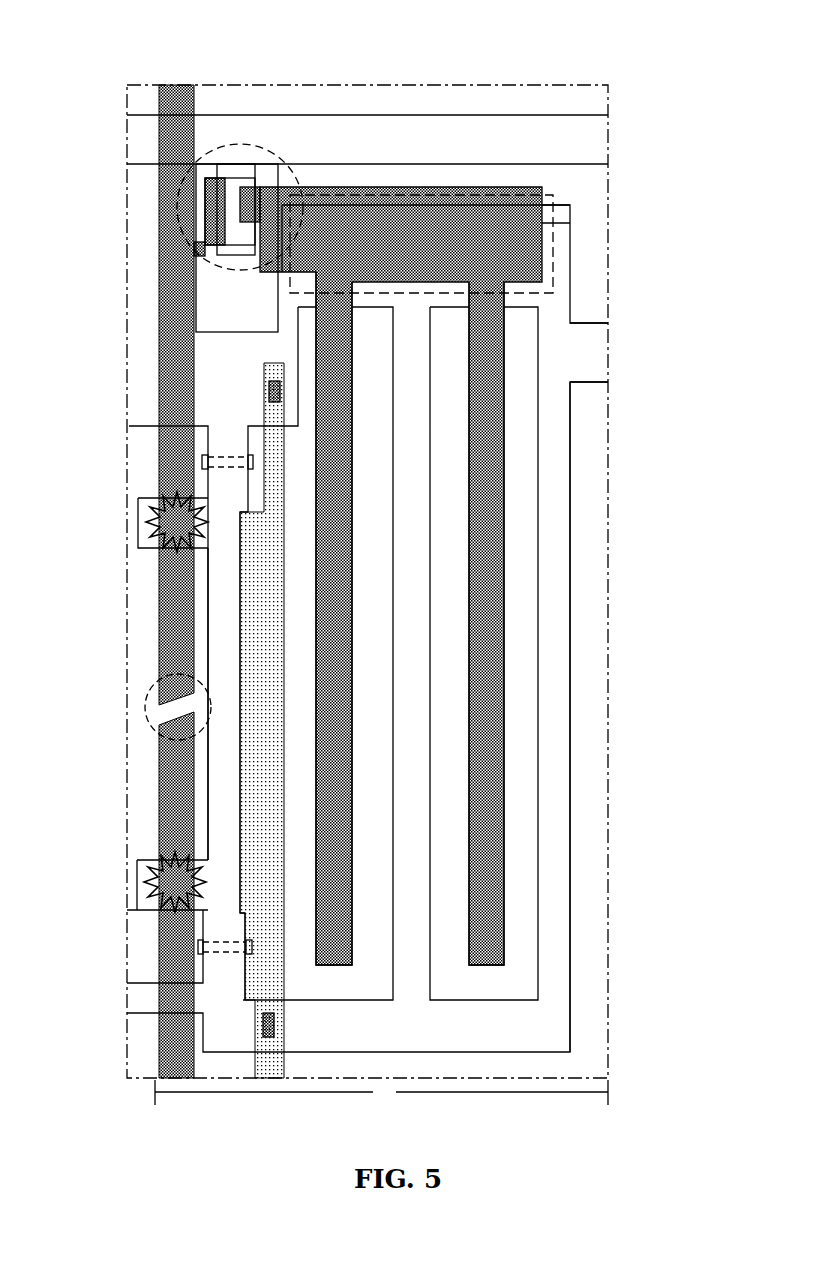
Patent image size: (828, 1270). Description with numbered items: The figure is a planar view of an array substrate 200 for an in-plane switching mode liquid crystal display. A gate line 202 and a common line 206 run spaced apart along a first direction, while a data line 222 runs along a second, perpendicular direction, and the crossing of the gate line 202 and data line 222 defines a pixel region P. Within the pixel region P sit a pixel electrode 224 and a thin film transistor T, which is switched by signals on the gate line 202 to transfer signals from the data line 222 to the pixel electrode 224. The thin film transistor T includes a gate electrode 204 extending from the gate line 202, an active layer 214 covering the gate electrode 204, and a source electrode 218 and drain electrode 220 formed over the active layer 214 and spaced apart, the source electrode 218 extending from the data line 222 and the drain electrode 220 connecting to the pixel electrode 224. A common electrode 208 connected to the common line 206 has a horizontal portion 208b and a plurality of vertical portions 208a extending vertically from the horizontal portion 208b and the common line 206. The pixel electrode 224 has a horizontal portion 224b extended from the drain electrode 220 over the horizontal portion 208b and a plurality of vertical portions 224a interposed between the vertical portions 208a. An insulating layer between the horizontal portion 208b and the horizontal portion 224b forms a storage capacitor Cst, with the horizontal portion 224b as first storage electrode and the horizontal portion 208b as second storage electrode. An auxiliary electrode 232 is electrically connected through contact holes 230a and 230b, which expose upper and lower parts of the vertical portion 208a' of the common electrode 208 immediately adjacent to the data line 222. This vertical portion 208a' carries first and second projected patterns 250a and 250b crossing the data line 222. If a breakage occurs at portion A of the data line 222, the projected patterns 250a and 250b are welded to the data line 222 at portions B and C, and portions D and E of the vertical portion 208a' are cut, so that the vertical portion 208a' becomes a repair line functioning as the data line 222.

The array substrate 200 is at (608, 776).
The gate line 202 is at (500, 114).
The gate electrode 204 is at (232, 258).
The common line 206 is at (570, 356).
The common electrode 208 is at (723, 313).
The vertical portions of the common electrode 208a is at (643, 717).
The vertical portion of the common electrode immediately adjacent to the data line 208a' is at (131, 704).
The horizontal portion of the common electrode 208b is at (571, 317).
The active layer 214 is at (240, 178).
The source electrode 218 is at (224, 160).
The drain electrode 220 is at (256, 195).
The data line 222 is at (160, 637).
The pixel electrode 224 is at (676, 212).
The vertical portions of the pixel electrode 224a is at (505, 326).
The horizontal portion of the pixel electrode 224b is at (545, 223).
The contact hole 230a is at (276, 390).
The contact hole 230b is at (265, 1030).
The auxiliary electrode 232 is at (266, 1070).
The first projected pattern 250a is at (140, 516).
The second projected pattern 250b is at (140, 884).
The storage capacitor Cst is at (571, 208).
The thin film transistor T is at (250, 278).
The portion of the data line A is at (145, 710).
The portion B is at (145, 866).
The portion C is at (140, 498).
The portion of the vertical portion of the common electrode D is at (227, 457).
The portion of the vertical portion of the common electrode E is at (222, 942).
The pixel region P is at (381, 1092).